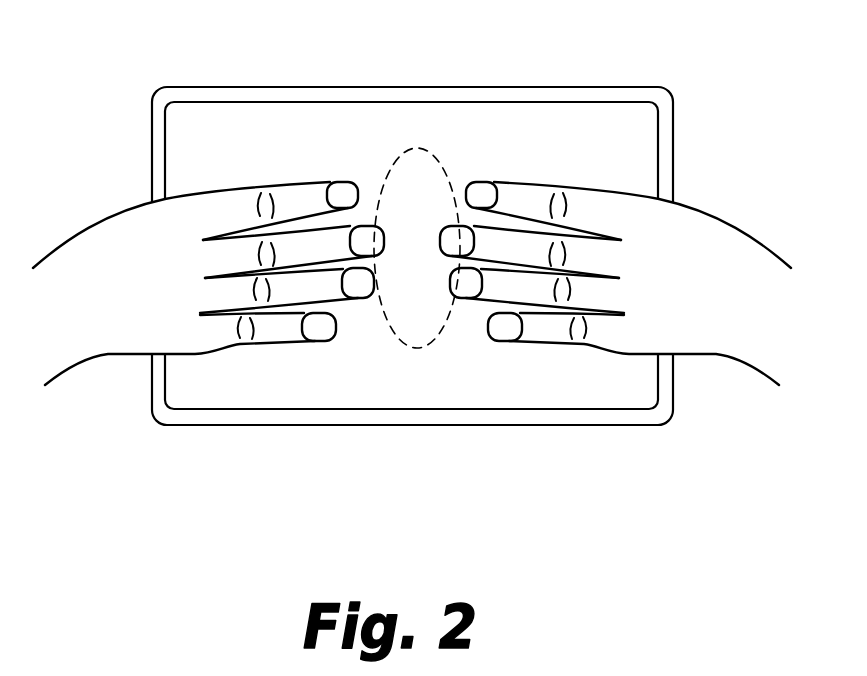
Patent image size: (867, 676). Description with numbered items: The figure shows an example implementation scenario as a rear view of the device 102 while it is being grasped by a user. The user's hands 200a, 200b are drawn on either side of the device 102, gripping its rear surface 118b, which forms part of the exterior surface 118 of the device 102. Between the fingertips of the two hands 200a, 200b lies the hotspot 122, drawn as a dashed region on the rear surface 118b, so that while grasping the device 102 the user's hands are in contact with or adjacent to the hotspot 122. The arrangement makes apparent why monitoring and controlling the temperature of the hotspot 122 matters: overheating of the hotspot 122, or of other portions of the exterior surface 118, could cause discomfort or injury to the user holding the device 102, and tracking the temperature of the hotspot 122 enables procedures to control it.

The device 102 is at (356, 220).
The exterior surface 118 is at (527, 88).
The rear surface 118b is at (438, 387).
The hotspot 122 is at (397, 180).
The user's hand 200a is at (127, 232).
The user's hand 200b is at (697, 233).